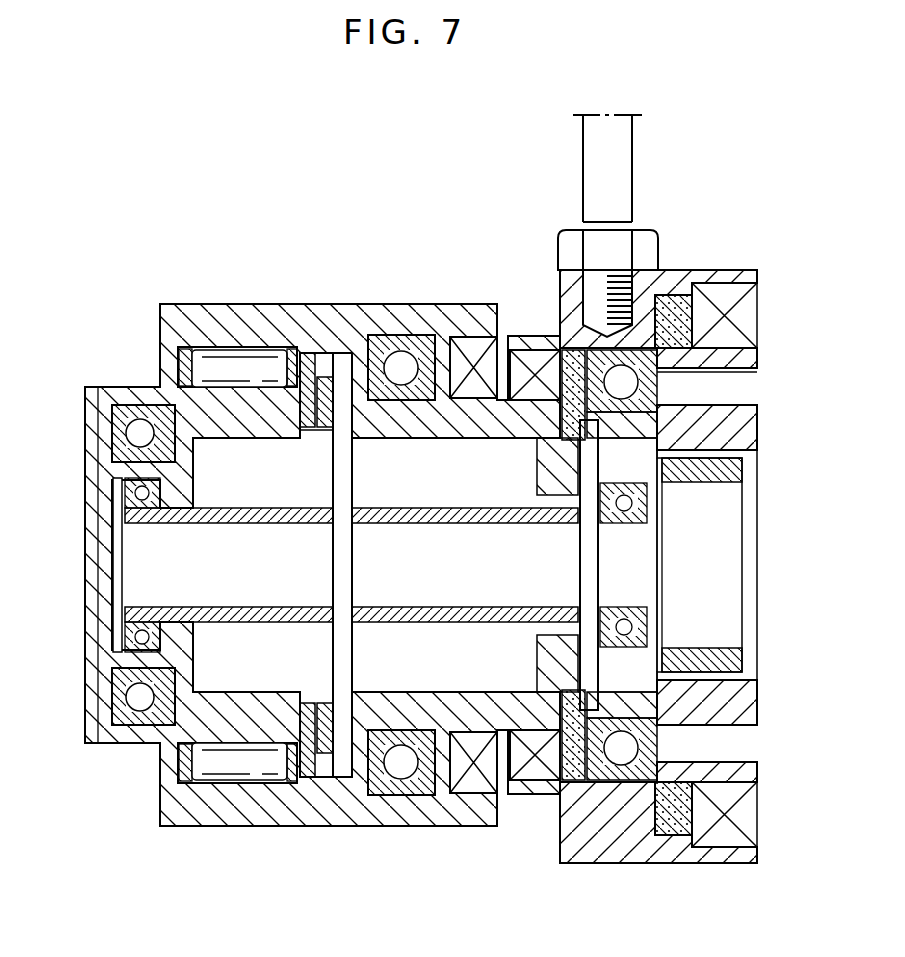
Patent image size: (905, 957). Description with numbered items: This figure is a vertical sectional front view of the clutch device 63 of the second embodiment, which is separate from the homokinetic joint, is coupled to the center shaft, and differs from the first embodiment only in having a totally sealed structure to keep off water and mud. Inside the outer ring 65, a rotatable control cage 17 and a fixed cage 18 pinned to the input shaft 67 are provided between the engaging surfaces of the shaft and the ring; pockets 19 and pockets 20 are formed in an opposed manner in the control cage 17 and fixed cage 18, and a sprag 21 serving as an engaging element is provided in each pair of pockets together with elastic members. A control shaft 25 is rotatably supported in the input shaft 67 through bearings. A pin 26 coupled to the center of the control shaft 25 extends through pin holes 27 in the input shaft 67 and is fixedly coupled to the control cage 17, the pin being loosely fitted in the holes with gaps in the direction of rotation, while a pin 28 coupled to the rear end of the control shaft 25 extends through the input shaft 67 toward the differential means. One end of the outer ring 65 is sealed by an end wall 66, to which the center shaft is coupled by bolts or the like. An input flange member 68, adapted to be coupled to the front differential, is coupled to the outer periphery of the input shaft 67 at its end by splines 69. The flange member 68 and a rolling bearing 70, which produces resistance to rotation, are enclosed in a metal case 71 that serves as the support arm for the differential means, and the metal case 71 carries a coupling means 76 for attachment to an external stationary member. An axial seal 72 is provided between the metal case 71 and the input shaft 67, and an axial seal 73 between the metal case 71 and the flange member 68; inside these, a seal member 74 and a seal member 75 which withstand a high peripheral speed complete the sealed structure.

The control cage 17 is at (330, 377).
The fixed cage 18 is at (305, 378).
The pockets 19 is at (193, 350).
The pockets 20 is at (237, 430).
The sprag 21 is at (237, 370).
The control shaft 25 is at (260, 522).
The pin 26 is at (350, 480).
The pin holes 27 is at (340, 423).
The pin 28 is at (585, 572).
The clutch device 63 is at (455, 300).
The outer ring 65 is at (388, 333).
The end wall 66 is at (106, 604).
The input shaft 67 is at (683, 660).
The input flange member 68 is at (742, 442).
The splines 69 is at (745, 507).
The rolling bearing 70 is at (657, 400).
The metal case 71 is at (716, 287).
The axial seal 72 is at (530, 398).
The axial seal 73 is at (737, 335).
The seal member 74 is at (566, 400).
The seal member 75 is at (745, 310).
The coupling means 76 is at (618, 172).